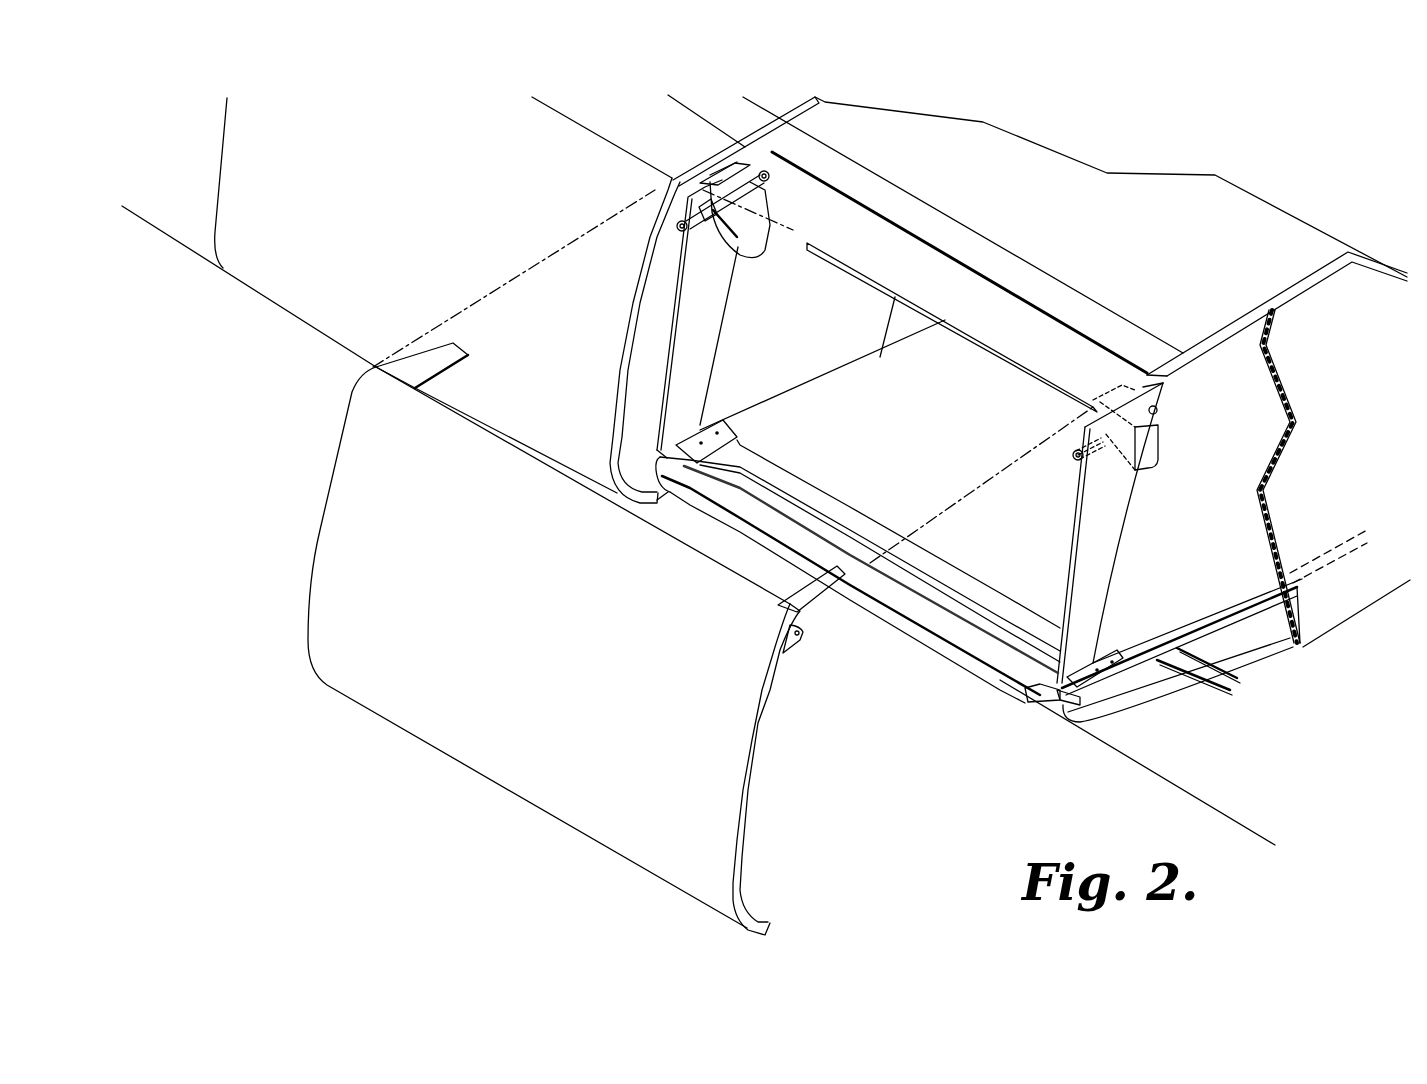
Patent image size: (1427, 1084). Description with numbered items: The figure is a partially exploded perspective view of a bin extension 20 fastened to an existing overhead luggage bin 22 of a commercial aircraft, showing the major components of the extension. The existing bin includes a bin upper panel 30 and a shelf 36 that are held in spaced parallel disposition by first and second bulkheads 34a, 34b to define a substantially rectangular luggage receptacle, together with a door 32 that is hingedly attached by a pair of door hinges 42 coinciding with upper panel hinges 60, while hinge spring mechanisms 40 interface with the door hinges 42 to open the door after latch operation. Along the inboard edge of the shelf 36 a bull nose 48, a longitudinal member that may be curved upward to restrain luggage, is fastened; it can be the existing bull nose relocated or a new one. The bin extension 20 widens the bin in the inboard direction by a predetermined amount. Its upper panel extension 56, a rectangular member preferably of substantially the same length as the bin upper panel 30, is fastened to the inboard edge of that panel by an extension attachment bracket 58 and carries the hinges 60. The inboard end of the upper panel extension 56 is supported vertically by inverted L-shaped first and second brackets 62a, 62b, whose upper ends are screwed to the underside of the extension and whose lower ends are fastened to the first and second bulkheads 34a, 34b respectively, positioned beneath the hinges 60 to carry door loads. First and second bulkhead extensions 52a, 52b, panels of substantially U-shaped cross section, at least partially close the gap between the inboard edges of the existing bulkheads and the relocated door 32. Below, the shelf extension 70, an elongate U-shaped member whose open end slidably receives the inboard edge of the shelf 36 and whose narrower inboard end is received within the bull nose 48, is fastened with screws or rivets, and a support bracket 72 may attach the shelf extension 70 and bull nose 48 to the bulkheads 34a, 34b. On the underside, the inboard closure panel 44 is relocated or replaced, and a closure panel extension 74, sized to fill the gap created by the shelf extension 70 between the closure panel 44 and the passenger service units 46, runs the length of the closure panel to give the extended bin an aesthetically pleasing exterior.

The bin extension 20 is at (998, 748).
The overhead luggage bin 22 is at (1275, 282).
The bin upper panel 30 is at (1148, 178).
The door 32 is at (507, 743).
The first bulkhead 34a is at (907, 330).
The second bulkhead 34b is at (1384, 398).
The shelf 36 is at (1225, 625).
The hinge spring mechanism 40 is at (710, 237).
The door hinge 42 is at (790, 643).
The inboard closure panel 44 is at (1125, 717).
The passenger service unit 46 is at (1273, 648).
The bull nose 48 is at (1037, 683).
The first bulkhead extension 52a is at (707, 324).
The second bulkhead extension 52b is at (1097, 572).
The upper panel extension 56 is at (1037, 352).
The attachment bracket 58 is at (1003, 258).
The hinge 60 is at (413, 360).
The first bracket 62a is at (747, 215).
The second bracket 62b is at (1153, 447).
The shelf extension 70 is at (842, 508).
The support bracket 72 is at (725, 425).
The closure panel extension 74 is at (1223, 687).